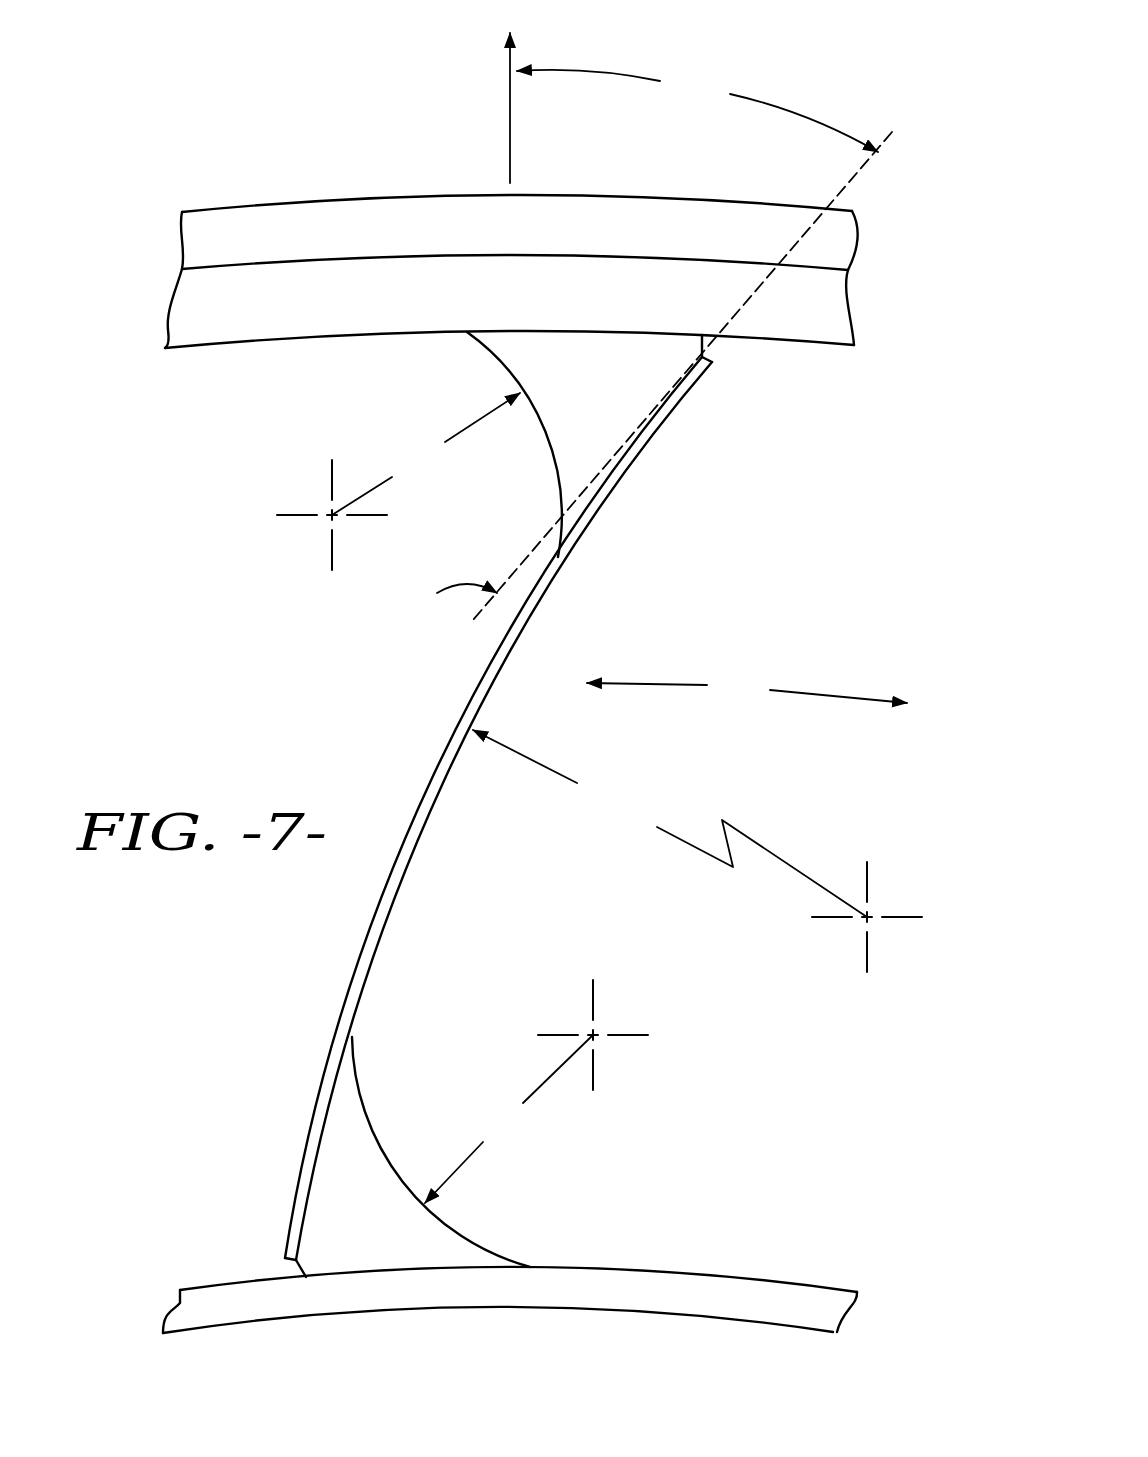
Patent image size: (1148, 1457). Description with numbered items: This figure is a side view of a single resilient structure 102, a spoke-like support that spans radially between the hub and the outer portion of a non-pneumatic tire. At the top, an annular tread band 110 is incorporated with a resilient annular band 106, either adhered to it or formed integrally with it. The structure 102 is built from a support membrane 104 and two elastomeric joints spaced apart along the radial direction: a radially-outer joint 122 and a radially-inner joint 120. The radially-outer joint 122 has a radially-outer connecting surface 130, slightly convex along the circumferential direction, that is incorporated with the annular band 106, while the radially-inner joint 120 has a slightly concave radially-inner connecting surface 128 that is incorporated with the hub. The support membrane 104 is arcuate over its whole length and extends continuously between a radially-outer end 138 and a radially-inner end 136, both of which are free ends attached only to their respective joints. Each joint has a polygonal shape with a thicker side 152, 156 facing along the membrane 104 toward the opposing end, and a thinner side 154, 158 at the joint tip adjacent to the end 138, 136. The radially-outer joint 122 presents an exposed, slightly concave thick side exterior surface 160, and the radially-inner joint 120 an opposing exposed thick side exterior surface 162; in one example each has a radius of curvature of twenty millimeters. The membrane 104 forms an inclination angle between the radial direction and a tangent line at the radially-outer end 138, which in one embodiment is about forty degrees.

The resilient structure 102 is at (263, 137).
The support membrane 104 is at (513, 642).
The resilient annular band 106 is at (228, 325).
The tread band 110 is at (680, 216).
The radially-inner joint 120 is at (453, 1251).
The radially-outer joint 122 is at (615, 385).
The radially-inner connecting surface 128 is at (360, 1268).
The radially-outer connecting surface 130 is at (517, 330).
The radially-inner end 136 is at (287, 1264).
The radially-outer end 138 is at (717, 351).
The thicker side 152 is at (517, 352).
The thinner side 154 is at (671, 348).
The thicker side 156 is at (420, 1234).
The thinner side 158 is at (323, 1253).
The thick side exterior surface 160 is at (547, 460).
The thick side exterior surface 162 is at (373, 1132).